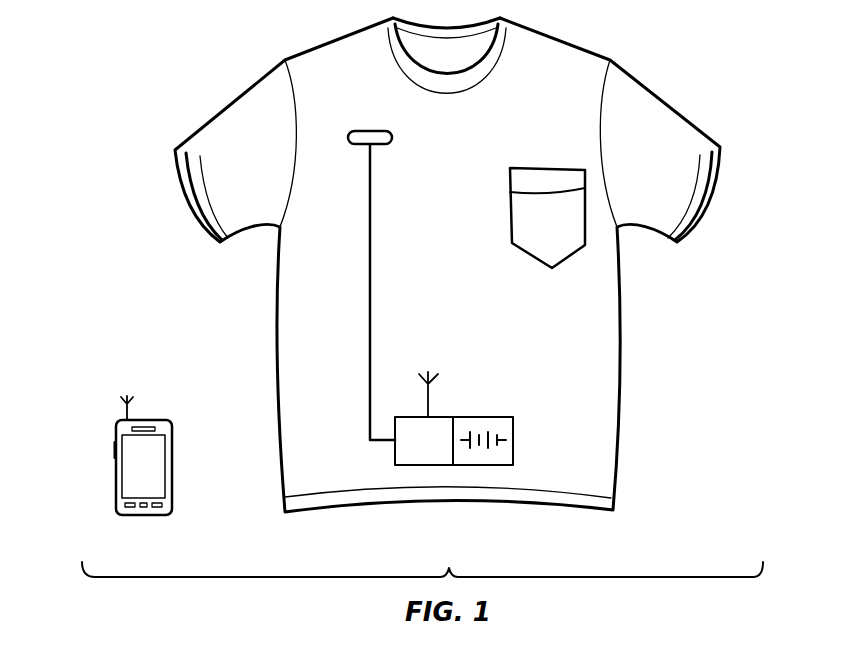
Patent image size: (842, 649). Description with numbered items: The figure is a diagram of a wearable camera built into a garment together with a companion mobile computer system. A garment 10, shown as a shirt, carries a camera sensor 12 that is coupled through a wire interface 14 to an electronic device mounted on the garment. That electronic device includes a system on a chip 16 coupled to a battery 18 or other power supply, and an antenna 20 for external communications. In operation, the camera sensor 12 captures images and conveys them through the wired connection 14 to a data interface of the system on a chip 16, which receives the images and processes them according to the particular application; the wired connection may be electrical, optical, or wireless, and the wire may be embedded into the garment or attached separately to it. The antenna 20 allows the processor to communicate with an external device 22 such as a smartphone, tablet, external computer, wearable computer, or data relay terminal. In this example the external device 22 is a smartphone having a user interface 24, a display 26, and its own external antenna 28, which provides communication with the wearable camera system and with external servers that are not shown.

The garment 10 is at (640, 82).
The camera sensor 12 is at (354, 131).
The wire interface 14 is at (370, 268).
The system on a chip 16 is at (420, 465).
The battery 18 is at (487, 465).
The antenna 20 is at (428, 402).
The external device 22 is at (172, 482).
The user interface 24 is at (127, 508).
The display 26 is at (157, 460).
The external antenna 28 is at (127, 412).